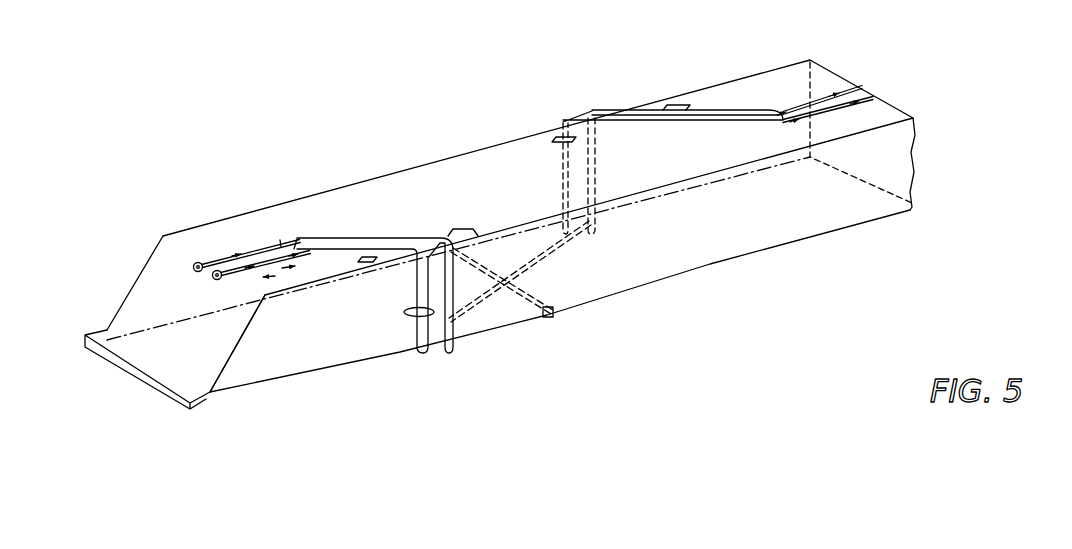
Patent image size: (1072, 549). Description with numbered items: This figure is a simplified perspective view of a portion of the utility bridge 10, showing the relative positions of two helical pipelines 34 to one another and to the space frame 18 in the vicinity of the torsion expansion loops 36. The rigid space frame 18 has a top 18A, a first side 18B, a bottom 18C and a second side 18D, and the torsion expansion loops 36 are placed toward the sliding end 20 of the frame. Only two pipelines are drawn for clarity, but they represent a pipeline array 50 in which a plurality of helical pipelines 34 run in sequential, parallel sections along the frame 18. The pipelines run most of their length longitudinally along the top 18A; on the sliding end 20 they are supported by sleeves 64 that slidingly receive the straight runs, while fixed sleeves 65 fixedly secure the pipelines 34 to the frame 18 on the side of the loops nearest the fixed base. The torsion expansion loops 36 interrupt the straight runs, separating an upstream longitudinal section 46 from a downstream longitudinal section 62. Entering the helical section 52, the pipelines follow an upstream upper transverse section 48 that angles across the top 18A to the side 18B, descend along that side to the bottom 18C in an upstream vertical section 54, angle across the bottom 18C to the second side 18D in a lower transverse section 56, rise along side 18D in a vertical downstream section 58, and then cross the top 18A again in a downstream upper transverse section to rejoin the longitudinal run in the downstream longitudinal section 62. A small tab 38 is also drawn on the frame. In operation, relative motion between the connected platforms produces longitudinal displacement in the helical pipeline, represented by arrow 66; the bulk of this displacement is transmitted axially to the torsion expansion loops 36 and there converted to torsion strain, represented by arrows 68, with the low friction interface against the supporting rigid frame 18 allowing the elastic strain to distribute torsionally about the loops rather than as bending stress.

The utility bridge 10 is at (453, 141).
The space frame 18 is at (523, 211).
The top 18A is at (673, 173).
The first side 18B is at (725, 100).
The bottom 18C is at (700, 252).
The second side 18D is at (858, 207).
The sliding end 20 is at (213, 395).
The helical pipelines 34 is at (847, 85).
The torsion expansion loops 36 is at (624, 295).
The tab 38 is at (563, 127).
The upstream longitudinal section 46 is at (870, 103).
The upstream upper transverse section 48 is at (663, 108).
The pipeline array 50 is at (324, 210).
The helical section 52 is at (587, 334).
The upstream vertical section 54 is at (563, 177).
The lower transverse section 56 is at (557, 263).
The vertical downstream section 58 is at (394, 237).
The downstream longitudinal section 62 is at (266, 242).
The sleeves 64 is at (281, 242).
The fixed sleeves 65 is at (783, 110).
The arrow 66 is at (277, 273).
The arrows 68 is at (412, 318).